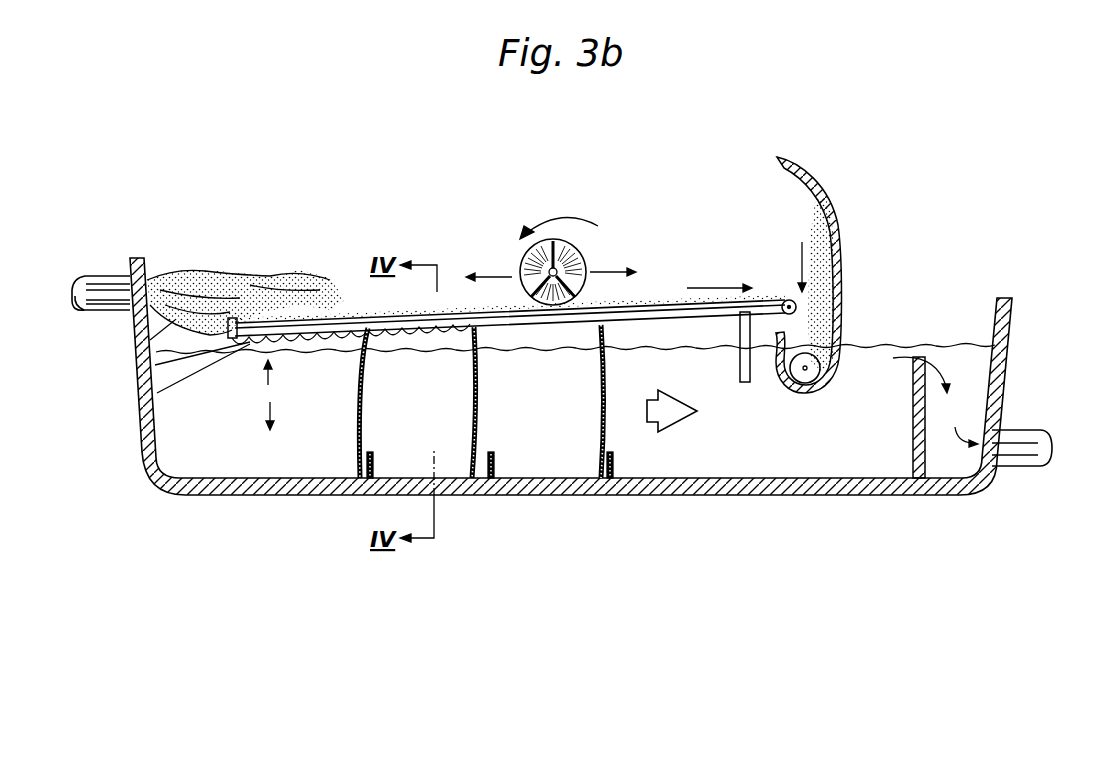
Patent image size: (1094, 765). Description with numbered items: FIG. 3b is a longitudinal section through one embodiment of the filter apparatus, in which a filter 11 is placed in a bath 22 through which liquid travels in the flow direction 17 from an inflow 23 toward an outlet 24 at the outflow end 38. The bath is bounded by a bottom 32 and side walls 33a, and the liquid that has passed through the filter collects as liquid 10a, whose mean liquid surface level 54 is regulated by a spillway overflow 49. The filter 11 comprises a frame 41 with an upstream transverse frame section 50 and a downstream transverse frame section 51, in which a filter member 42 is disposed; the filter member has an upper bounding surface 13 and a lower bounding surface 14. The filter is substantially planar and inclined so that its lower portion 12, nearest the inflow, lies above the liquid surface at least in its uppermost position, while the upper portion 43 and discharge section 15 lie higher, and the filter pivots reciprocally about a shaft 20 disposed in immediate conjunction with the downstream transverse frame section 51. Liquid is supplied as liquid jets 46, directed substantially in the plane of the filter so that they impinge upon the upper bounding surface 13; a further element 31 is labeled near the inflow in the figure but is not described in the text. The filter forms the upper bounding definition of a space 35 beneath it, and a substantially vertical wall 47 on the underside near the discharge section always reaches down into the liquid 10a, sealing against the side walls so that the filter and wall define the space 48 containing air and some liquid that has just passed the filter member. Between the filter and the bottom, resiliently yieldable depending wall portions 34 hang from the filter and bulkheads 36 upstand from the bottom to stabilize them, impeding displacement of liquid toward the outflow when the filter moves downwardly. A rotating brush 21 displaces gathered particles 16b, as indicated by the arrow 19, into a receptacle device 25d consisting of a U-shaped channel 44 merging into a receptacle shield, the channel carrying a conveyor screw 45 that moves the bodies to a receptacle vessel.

The liquid which has passed through the filter 10a is at (553, 463).
The filter 11 is at (444, 312).
The lower portion of the filter 12 is at (145, 373).
The upper bounding surface 13 is at (277, 330).
The lower bounding surface 14 is at (142, 402).
The discharge section of the filter 15 is at (688, 265).
The particles 16b is at (460, 294).
The flow direction 17 is at (710, 505).
The arrow 19 is at (802, 242).
The shaft 20 is at (790, 300).
The brush 21 is at (575, 245).
The bath 22 is at (457, 518).
The inflow 23 is at (108, 290).
The outlet 24 is at (1013, 443).
The receptacle device 25d is at (803, 174).
The feed material 31 is at (150, 340).
The bottom 32 is at (677, 490).
The side wall 33a is at (525, 458).
The depending wall portions 34 is at (353, 420).
The space 35 is at (317, 365).
The bulkheads 36 is at (612, 467).
The outflow end 38 is at (1003, 308).
The frame 41 is at (635, 300).
The filter member 42 is at (355, 318).
The upper portion of the filter 43 is at (660, 298).
The U-shaped channel 44 is at (840, 348).
The conveyor screw 45 is at (840, 336).
The liquid jets 46 is at (172, 284).
The vertical wall 47 is at (752, 382).
The air-filled portion of space 48 is at (628, 332).
The spillway overflow 49 is at (928, 455).
The upstream transverse frame section 50 is at (236, 318).
The downstream transverse frame section 51 is at (783, 298).
The mean liquid surface level 54 is at (712, 348).